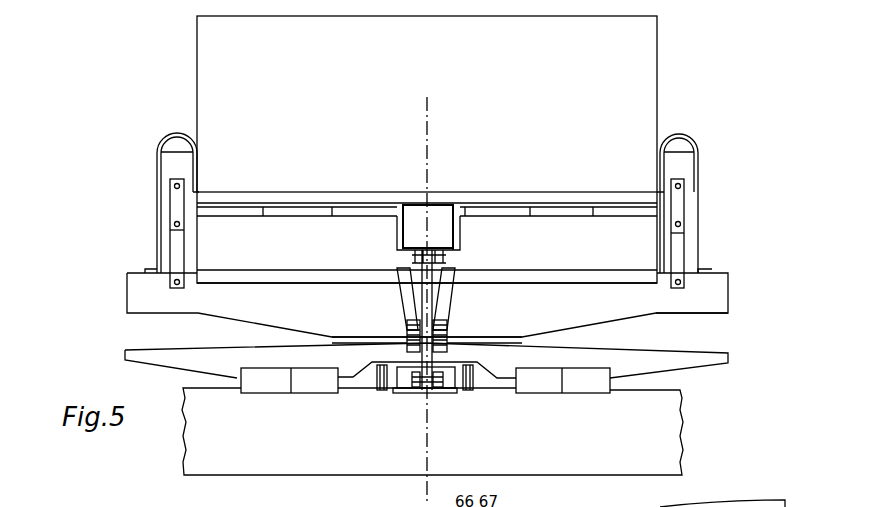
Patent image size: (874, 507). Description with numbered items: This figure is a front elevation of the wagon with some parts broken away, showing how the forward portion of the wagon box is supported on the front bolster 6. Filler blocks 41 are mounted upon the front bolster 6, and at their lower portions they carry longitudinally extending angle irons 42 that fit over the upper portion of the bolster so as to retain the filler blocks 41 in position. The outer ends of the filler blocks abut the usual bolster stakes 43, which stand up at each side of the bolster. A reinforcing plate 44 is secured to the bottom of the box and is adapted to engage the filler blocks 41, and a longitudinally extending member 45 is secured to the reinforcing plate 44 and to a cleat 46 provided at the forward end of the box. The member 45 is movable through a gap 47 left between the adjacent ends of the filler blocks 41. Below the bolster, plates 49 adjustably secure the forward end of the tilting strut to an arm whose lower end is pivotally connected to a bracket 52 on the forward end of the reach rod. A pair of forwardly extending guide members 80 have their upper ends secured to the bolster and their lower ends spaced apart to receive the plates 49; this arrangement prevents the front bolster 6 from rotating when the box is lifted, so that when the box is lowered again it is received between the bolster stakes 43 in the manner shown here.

The front bolster 6 is at (135, 292).
The filler blocks 41 is at (318, 228).
The angle irons 42 is at (311, 276).
The bolster stakes 43 is at (165, 173).
The reinforcing plate 44 is at (730, 505).
The longitudinally extending member 45 is at (408, 232).
The cleat 46 is at (507, 197).
The gap 47 is at (461, 238).
The plates 49 is at (422, 277).
The bracket 52 is at (405, 382).
The guide members 80 is at (410, 323).